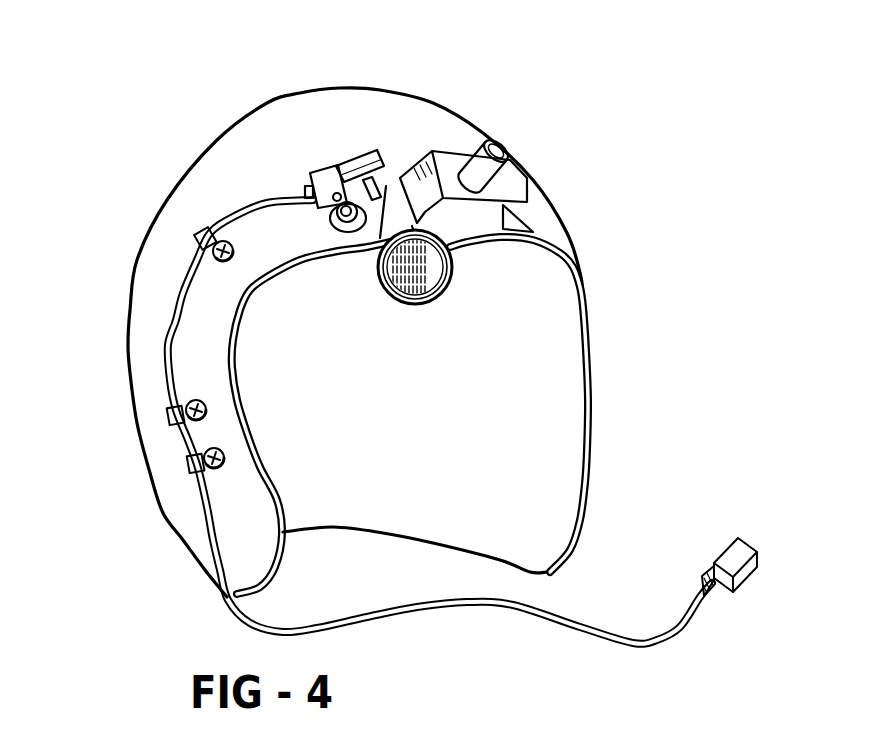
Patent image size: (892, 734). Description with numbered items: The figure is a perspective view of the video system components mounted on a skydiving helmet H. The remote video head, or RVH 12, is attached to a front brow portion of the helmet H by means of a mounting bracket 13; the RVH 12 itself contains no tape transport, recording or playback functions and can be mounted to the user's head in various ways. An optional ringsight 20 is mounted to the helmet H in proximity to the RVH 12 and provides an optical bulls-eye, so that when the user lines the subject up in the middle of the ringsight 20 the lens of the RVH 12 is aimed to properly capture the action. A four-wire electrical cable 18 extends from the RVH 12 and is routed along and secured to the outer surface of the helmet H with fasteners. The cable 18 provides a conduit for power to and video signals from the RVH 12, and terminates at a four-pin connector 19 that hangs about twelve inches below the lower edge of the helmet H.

The skydiving helmet H is at (428, 112).
The RVH 12 is at (517, 183).
The mounting bracket 13 is at (418, 170).
The four-wire electrical cable 18 is at (170, 412).
The four-pin connector 19 is at (733, 548).
The ringsight 20 is at (395, 306).